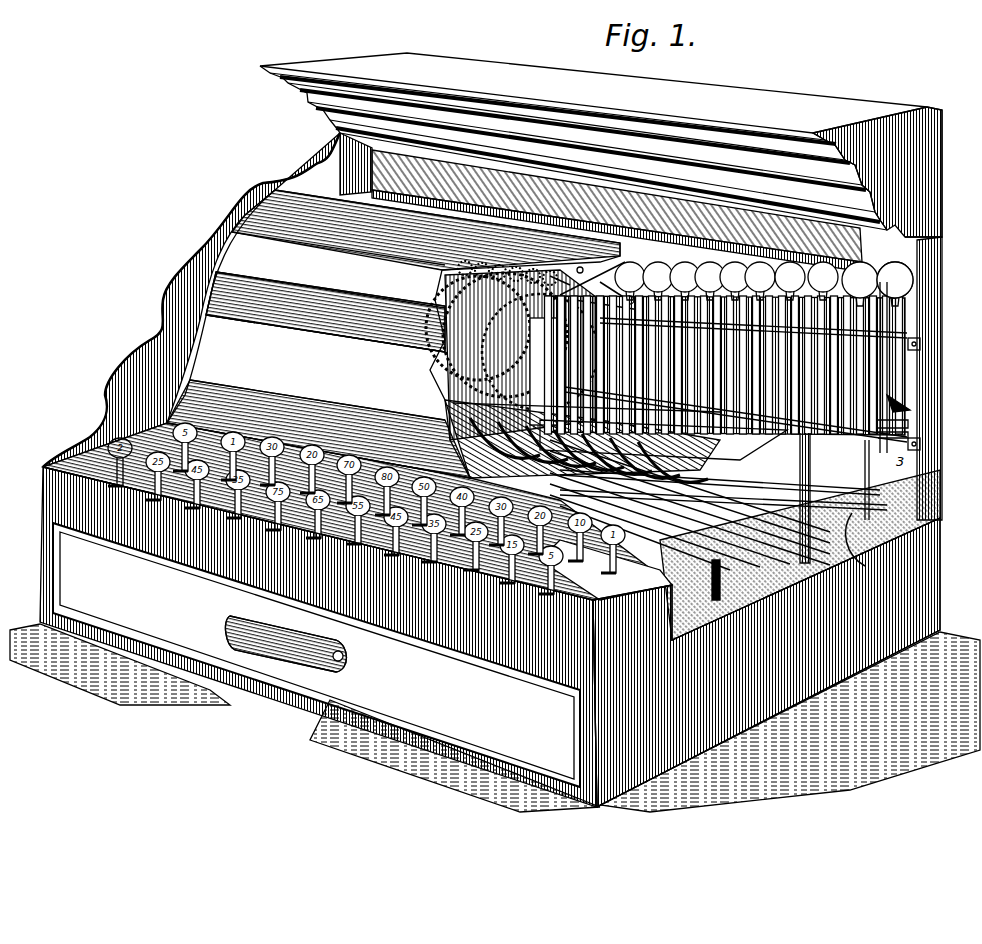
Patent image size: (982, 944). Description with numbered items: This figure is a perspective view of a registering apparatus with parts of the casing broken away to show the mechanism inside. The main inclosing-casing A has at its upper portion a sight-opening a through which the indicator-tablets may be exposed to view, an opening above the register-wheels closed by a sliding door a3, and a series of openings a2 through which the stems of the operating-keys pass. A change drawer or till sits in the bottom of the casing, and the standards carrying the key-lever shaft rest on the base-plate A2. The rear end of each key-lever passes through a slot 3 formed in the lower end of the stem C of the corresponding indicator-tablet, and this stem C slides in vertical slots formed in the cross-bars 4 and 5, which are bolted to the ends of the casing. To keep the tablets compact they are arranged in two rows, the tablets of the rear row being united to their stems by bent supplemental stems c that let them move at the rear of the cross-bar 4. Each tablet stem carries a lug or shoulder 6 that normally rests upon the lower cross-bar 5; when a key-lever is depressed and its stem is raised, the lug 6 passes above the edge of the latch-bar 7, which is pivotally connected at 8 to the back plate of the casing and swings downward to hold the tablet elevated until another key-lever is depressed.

The main inclosing-casing A is at (393, 334).
The base-plate A2 is at (905, 545).
The sight-opening a is at (333, 158).
The openings for key stems a2 is at (503, 597).
The door a3 is at (325, 303).
The supplemental stem c is at (900, 358).
The stem of indicator-tablet C is at (890, 382).
The slot 3 is at (887, 500).
The cross-bar 4 is at (907, 331).
The lower cross-bar 5 is at (900, 443).
The lug or shoulder 6 is at (910, 423).
The latch-bar 7 is at (907, 403).
The pivot of latch-bar 8 is at (907, 433).